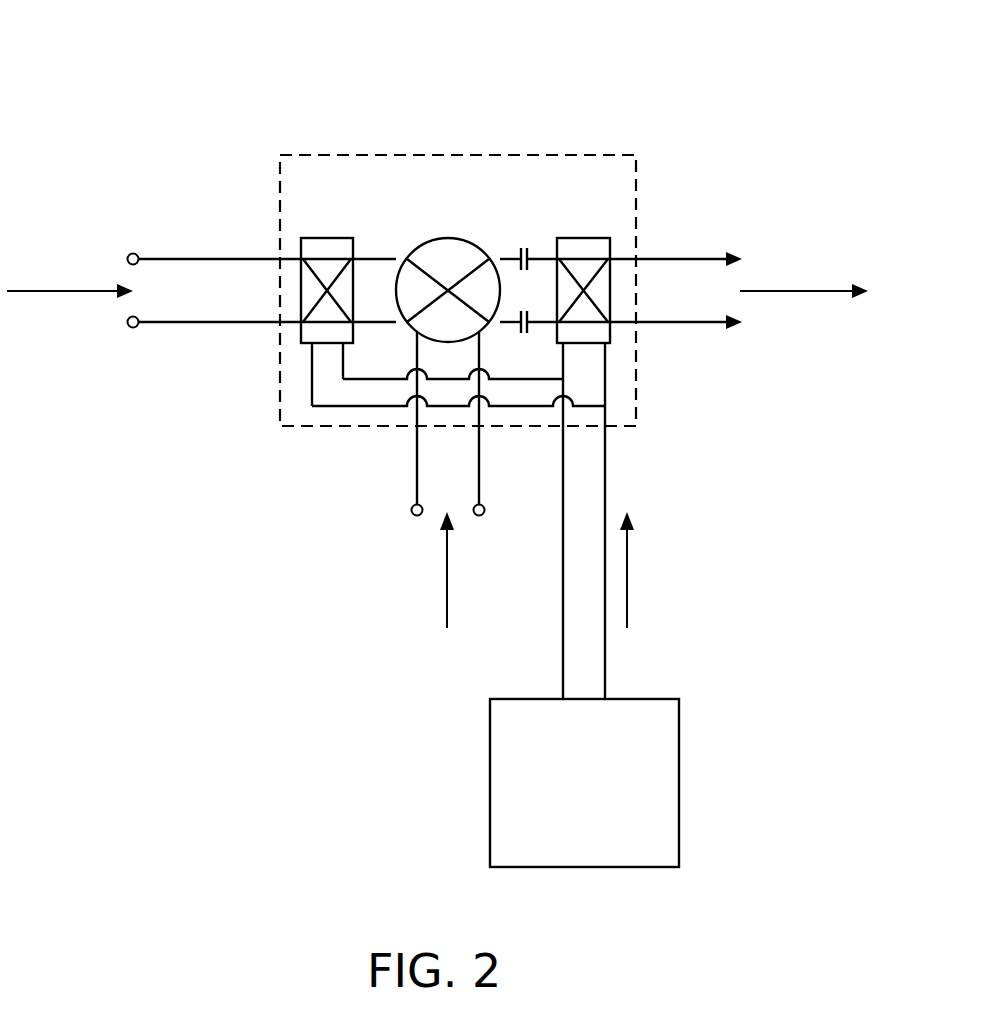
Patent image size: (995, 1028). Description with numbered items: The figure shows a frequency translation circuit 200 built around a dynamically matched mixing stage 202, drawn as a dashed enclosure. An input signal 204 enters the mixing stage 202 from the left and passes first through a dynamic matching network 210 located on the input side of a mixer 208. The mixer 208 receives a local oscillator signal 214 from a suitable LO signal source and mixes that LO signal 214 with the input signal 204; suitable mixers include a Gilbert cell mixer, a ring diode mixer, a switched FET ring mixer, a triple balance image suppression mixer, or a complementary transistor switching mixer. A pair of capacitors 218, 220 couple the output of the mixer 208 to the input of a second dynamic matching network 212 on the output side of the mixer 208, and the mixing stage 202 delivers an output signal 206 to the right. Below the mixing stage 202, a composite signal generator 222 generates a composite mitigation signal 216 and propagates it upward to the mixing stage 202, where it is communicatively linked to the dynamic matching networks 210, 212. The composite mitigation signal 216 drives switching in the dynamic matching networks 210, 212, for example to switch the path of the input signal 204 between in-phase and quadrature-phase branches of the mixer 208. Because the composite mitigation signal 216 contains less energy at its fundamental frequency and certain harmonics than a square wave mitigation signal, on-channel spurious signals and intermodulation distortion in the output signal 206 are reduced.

The frequency translation circuit 200 is at (234, 60).
The mixing stage 202 is at (637, 164).
The input signal 204 is at (73, 320).
The output signal 206 is at (797, 322).
The mixer 208 is at (428, 242).
The dynamic matching network 210 is at (324, 238).
The dynamic matching network 212 is at (590, 238).
The local oscillator signal 214 is at (428, 481).
The composite mitigation signal 216 is at (658, 521).
The capacitor 218 is at (520, 249).
The capacitor 220 is at (526, 331).
The composite signal generator 222 is at (584, 783).